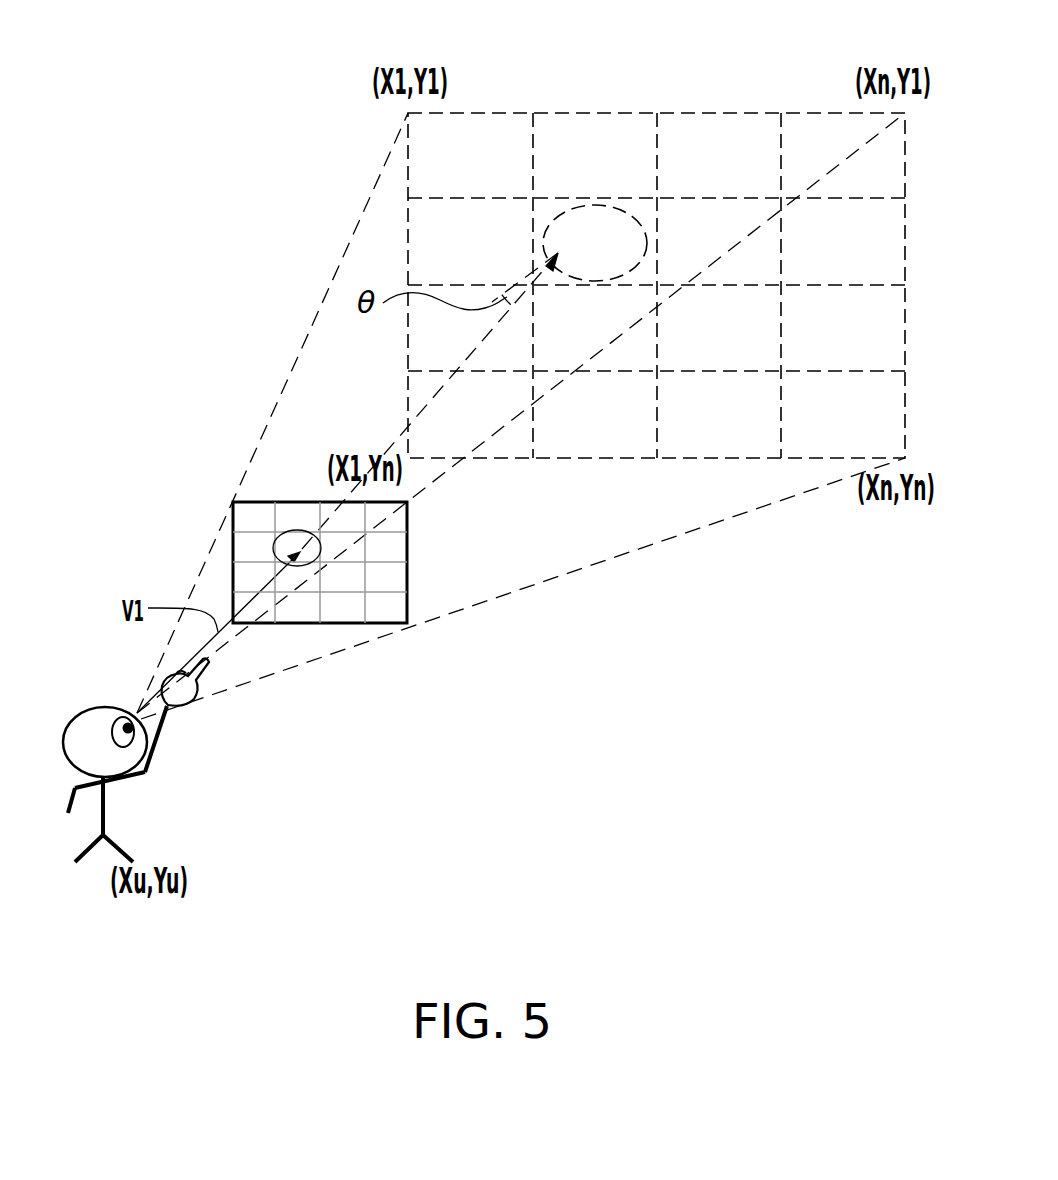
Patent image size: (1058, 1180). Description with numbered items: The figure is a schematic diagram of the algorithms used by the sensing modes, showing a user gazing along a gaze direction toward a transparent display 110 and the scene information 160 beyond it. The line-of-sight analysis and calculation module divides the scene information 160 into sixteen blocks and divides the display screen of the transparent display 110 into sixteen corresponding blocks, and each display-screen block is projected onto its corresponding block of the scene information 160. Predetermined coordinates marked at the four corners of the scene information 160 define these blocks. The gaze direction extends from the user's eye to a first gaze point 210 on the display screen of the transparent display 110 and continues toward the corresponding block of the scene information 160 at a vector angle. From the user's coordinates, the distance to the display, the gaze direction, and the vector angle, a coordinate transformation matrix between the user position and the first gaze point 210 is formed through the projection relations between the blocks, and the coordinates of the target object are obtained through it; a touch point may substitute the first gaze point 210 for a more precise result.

The transparent display 110 is at (407, 577).
The scene information 160 is at (703, 112).
The first gaze point 210 is at (314, 568).